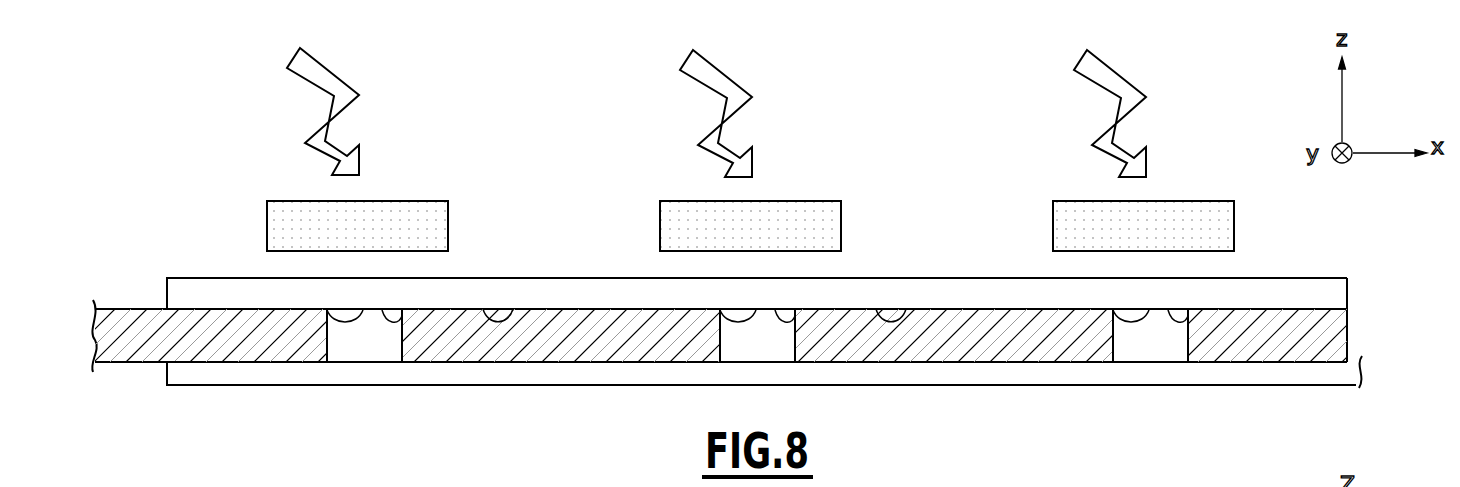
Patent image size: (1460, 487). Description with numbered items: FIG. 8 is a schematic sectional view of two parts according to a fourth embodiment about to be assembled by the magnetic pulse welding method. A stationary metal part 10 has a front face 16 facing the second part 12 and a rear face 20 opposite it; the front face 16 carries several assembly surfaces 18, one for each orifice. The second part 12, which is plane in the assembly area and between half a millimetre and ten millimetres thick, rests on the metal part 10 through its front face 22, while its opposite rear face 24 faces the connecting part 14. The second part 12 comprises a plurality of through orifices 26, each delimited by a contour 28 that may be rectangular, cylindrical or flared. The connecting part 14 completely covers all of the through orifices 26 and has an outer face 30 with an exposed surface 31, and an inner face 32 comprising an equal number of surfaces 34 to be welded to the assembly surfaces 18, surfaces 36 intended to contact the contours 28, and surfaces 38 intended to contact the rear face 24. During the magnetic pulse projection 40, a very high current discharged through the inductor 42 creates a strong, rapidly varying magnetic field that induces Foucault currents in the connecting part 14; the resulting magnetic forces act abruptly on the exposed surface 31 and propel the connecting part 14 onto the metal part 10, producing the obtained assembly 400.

The metal part 10 is at (1365, 373).
The second part 12 is at (1352, 327).
The connecting part 14 is at (1303, 290).
The front face 16 is at (1360, 362).
The assembly surface 18 is at (355, 360).
The rear face 20 is at (1257, 386).
The front face 22 is at (194, 363).
The rear face 24 is at (143, 307).
The through orifice 26 is at (375, 343).
The contour 28 is at (327, 337).
The outer face 30 is at (236, 311).
The exposed surface 31 is at (403, 278).
The inner face 32 is at (222, 315).
The surface to be welded 34 is at (327, 317).
The contour contact surface 36 is at (404, 319).
The rear face contact surface 38 is at (513, 318).
The magnetic pulse projection 40 is at (422, 163).
The inductor 42 is at (267, 201).
The obtained assembly 400 is at (152, 486).